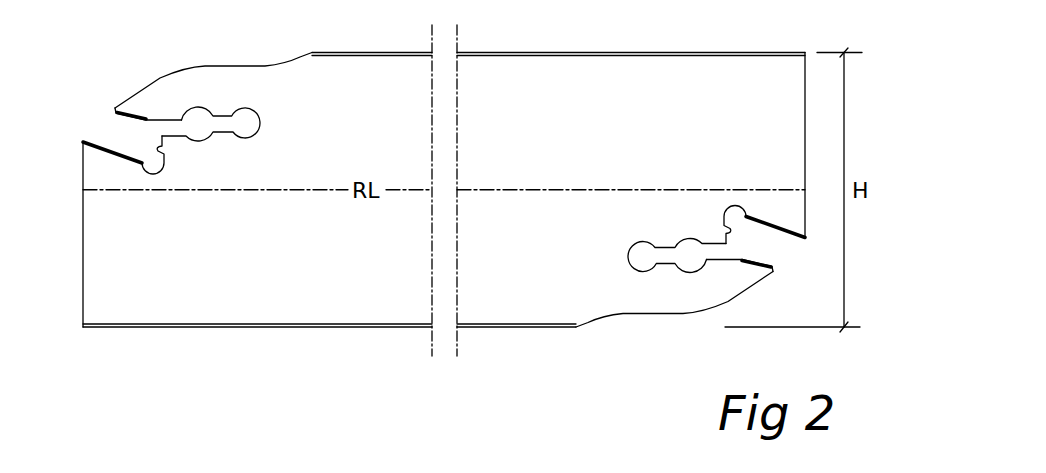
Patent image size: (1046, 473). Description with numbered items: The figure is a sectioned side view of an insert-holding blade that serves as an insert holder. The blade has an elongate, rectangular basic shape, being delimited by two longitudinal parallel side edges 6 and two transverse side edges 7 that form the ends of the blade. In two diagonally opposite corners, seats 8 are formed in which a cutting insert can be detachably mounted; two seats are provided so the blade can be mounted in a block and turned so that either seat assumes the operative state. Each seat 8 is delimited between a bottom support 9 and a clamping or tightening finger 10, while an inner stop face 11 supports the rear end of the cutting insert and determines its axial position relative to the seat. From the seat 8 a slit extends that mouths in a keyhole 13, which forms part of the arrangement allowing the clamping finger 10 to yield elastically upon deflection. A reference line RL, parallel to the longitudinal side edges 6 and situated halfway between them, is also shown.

The longitudinal side edge 6 is at (607, 52).
The transverse side edge 7 is at (83, 262).
The seat 8 is at (110, 125).
The bottom support 9 is at (97, 140).
The clamping finger 10 is at (147, 63).
The inner stop face 11 is at (162, 148).
The keyhole 13 is at (205, 100).